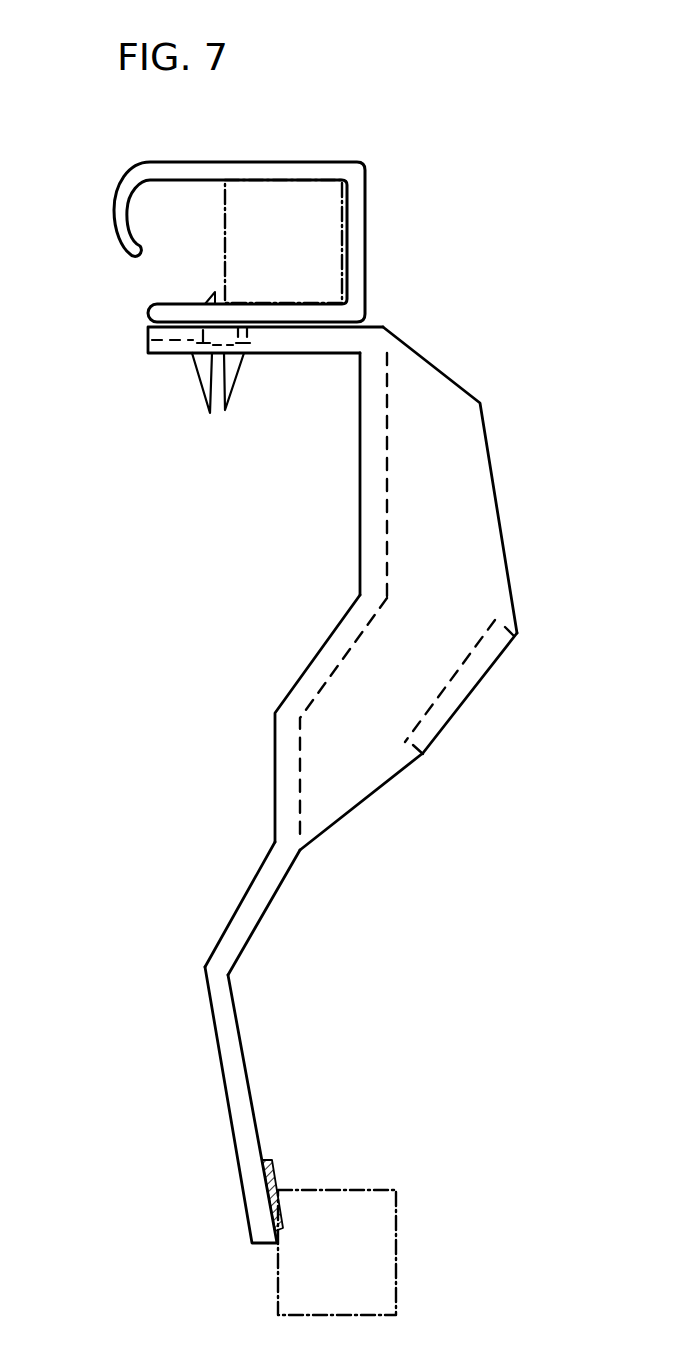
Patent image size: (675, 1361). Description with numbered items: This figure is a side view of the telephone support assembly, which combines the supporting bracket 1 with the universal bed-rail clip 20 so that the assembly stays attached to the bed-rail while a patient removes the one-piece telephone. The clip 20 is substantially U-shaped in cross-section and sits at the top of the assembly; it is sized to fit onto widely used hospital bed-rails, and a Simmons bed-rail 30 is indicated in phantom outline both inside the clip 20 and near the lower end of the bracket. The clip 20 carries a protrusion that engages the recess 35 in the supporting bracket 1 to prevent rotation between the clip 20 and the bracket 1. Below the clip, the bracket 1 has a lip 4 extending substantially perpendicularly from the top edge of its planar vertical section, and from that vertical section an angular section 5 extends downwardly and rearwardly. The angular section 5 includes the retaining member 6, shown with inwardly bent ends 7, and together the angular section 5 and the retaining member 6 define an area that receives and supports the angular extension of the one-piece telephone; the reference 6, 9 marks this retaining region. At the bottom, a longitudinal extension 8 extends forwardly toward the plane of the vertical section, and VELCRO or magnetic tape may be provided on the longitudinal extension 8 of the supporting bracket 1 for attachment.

The telephone support 1 is at (385, 785).
The lip 4 is at (318, 343).
The angular section 5 is at (247, 918).
The retaining member 6 is at (477, 480).
The inwardly bent ends 7 is at (462, 697).
The longitudinal extension 8 is at (240, 1087).
The panel wall 9 is at (472, 547).
The universal bed-rail clip 20 is at (452, 228).
The Simmons bed-rail 30 is at (335, 192).
The recess 35 is at (150, 330).